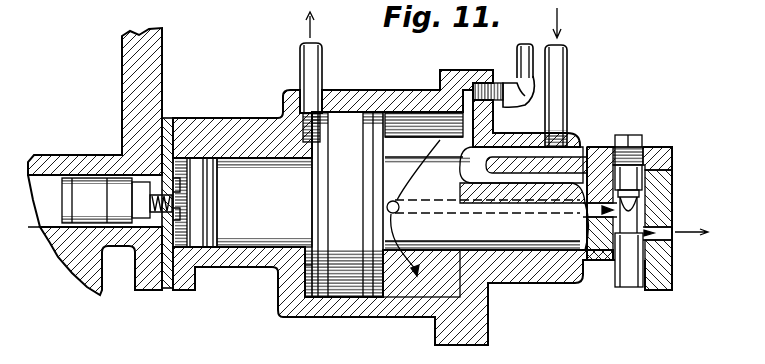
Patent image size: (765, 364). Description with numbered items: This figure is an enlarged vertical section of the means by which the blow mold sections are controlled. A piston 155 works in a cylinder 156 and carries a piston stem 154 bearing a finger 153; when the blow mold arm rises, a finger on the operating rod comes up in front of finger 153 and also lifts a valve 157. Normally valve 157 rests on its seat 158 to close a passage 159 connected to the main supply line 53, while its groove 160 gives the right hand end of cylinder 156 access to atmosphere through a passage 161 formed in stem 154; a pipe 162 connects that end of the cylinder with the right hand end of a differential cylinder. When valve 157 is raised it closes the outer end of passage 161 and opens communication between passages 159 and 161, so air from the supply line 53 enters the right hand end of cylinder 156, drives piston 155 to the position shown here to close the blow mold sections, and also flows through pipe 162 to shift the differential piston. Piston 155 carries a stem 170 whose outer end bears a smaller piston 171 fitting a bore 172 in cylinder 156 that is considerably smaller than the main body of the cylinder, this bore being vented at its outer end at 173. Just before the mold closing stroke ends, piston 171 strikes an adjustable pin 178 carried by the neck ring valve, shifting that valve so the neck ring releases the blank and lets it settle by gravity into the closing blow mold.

The main supply line 53 is at (567, 106).
The finger 153 is at (662, 291).
The piston stem 154 is at (522, 240).
The piston 155 is at (353, 291).
The cylinder 156 is at (393, 91).
The valve 157 is at (627, 291).
The seat 158 is at (667, 193).
The passage 159 is at (570, 178).
The groove 160 is at (672, 208).
The passage 161 is at (587, 212).
The pipe 162 is at (522, 50).
The stem 170 is at (273, 228).
The piston 171 is at (210, 248).
The bore 172 is at (238, 157).
The vent 173 is at (180, 116).
The adjustable pin 178 is at (157, 213).